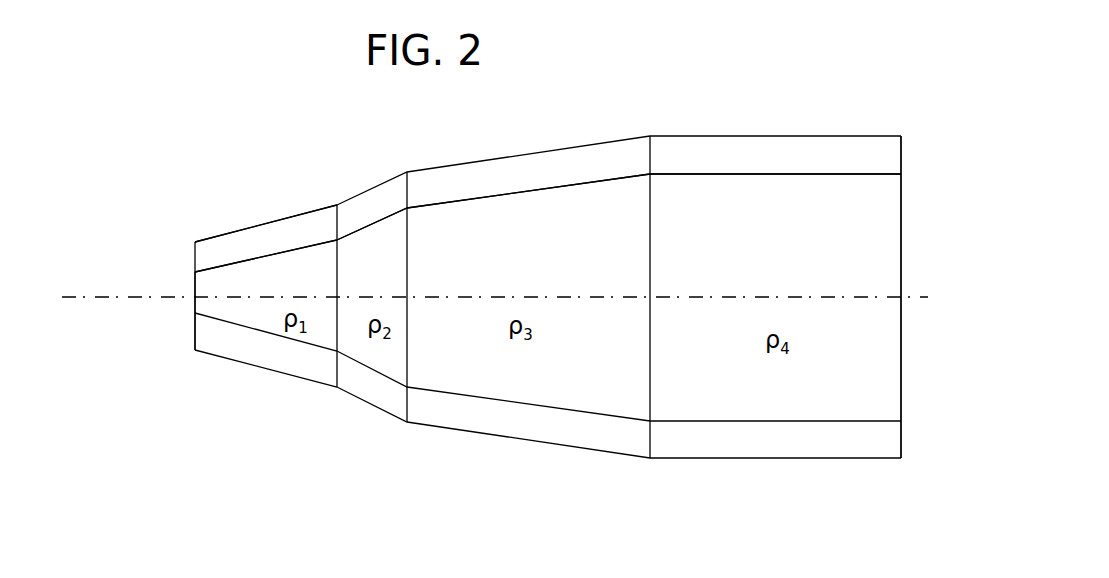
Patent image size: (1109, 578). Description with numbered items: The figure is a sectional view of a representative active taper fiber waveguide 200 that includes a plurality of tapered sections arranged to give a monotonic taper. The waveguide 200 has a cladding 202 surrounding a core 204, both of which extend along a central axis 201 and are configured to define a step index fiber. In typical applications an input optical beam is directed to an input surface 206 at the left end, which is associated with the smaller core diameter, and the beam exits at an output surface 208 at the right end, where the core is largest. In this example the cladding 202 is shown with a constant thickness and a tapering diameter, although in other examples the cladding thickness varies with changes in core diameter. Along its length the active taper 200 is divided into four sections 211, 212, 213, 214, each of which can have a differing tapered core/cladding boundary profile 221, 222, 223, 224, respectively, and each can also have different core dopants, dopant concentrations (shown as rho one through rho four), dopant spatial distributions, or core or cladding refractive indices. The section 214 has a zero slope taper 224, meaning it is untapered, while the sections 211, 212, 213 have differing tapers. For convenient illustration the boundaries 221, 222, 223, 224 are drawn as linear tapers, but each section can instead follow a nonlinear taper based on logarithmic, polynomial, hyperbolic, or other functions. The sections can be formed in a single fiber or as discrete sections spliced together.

The active taper fiber waveguide 200 is at (322, 146).
The axis 201 is at (709, 297).
The cladding 202 is at (252, 233).
The core 204 is at (205, 286).
The input surface 206 is at (195, 327).
The output surface 208 is at (901, 376).
The section 211 is at (332, 405).
The section 212 is at (412, 436).
The section 213 is at (650, 470).
The section 214 is at (902, 487).
The tapered core/cladding boundary profile 221 is at (237, 264).
The tapered core/cladding boundary profile 222 is at (352, 233).
The tapered core/cladding boundary profile 223 is at (521, 195).
The zero slope taper 224 is at (721, 175).